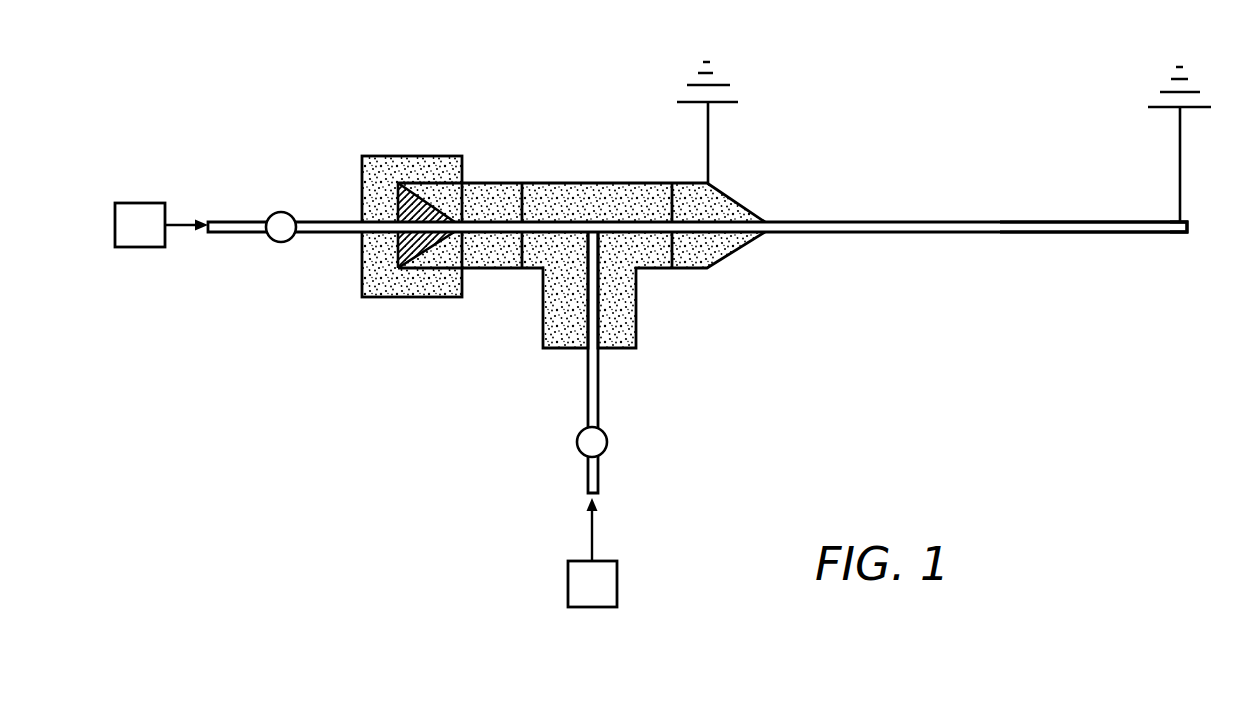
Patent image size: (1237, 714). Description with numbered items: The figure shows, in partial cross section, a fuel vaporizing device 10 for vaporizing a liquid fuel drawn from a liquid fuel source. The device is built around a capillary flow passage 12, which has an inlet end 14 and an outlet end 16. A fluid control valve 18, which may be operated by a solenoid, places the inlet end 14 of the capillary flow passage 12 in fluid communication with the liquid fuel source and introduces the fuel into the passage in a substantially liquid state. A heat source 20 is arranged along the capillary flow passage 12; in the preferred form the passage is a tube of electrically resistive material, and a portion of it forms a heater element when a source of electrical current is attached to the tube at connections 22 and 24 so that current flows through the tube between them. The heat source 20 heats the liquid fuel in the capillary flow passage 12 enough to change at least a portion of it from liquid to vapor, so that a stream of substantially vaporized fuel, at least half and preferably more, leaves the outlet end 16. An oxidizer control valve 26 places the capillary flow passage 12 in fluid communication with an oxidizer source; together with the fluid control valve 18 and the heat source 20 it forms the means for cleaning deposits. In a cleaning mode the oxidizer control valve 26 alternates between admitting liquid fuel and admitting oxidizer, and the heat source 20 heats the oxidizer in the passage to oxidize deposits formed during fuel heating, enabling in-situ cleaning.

The fuel vaporizing device 10 is at (676, 314).
The capillary flow passage 12 is at (900, 235).
The inlet end 14 is at (583, 200).
The outlet end 16 is at (1165, 235).
The fluid control valve 18 is at (606, 447).
The heat source 20 is at (1017, 221).
The connection 22 is at (709, 180).
The connection 24 is at (1185, 219).
The oxidizer control valve 26 is at (283, 242).